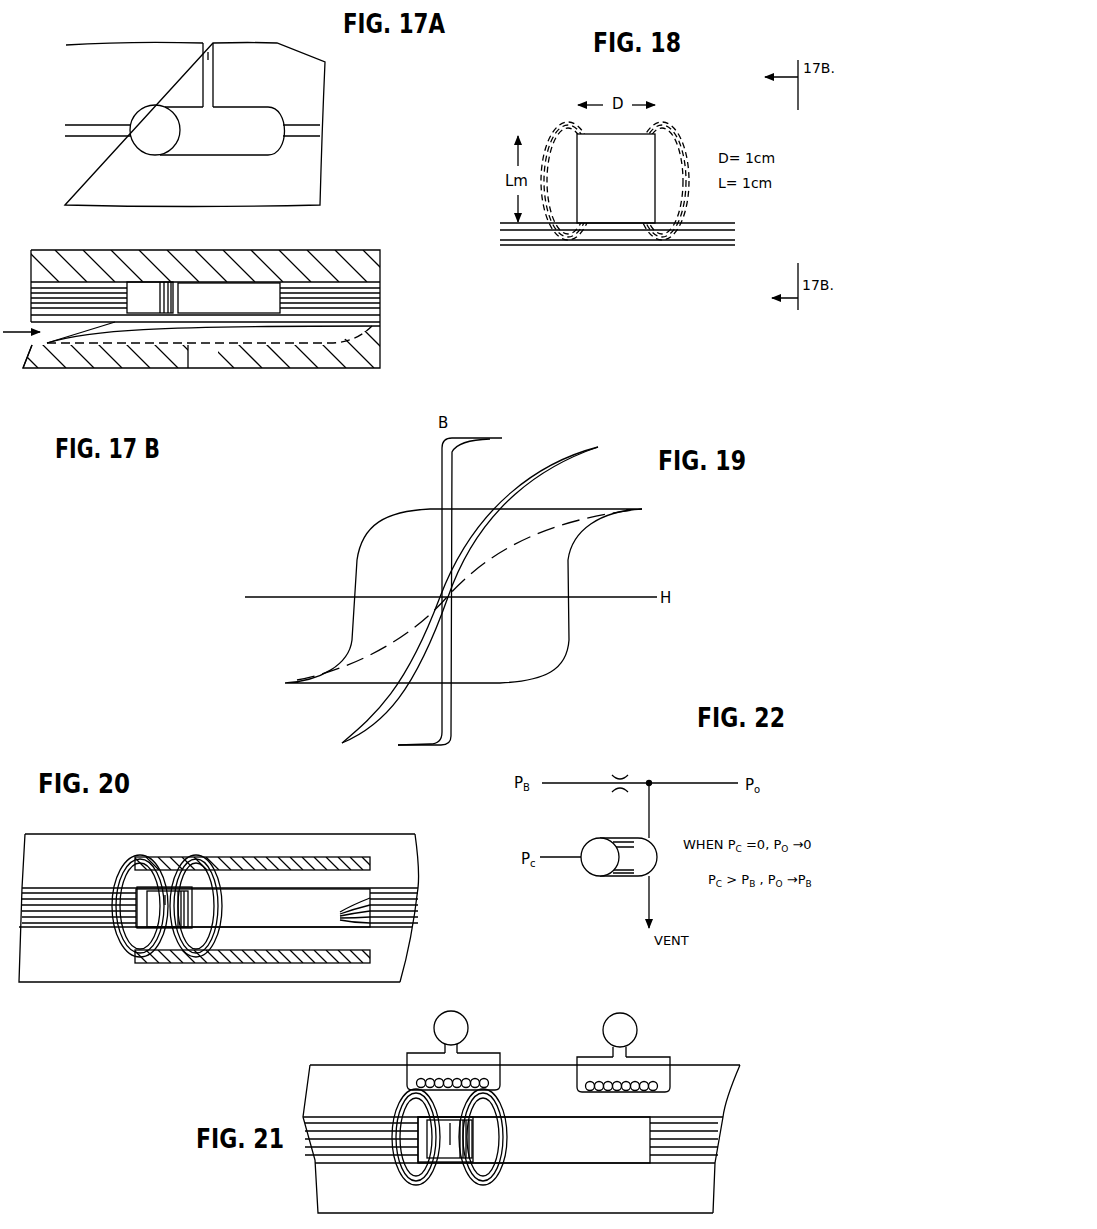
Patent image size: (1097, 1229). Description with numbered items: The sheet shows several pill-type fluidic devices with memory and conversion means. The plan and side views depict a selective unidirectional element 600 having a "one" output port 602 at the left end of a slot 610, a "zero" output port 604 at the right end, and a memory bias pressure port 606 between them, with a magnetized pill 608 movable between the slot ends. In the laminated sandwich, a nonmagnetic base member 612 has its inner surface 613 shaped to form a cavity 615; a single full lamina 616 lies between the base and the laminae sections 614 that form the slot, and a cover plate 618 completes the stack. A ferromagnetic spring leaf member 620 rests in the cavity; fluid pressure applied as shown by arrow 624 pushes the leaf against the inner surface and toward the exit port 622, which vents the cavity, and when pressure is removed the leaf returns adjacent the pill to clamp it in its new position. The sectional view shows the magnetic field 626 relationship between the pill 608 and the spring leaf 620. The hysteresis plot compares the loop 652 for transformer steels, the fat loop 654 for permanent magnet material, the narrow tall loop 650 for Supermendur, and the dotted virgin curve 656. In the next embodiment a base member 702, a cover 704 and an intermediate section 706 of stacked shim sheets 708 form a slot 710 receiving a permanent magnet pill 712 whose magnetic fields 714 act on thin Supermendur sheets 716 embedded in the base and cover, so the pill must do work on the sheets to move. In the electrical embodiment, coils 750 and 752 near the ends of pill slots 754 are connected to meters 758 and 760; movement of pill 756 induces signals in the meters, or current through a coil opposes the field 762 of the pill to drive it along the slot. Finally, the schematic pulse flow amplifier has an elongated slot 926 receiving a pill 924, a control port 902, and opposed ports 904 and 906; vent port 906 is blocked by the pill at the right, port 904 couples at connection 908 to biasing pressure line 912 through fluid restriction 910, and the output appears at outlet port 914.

In FIG. 17A, the selective unidirectional element 600 is at (293, 97).
In FIG. 17B, the selective unidirectional element 600 is at (283, 371).
In FIG. 17A, the "1" output port 602 is at (82, 134).
In FIG. 17A, the "0" output port 604 is at (303, 138).
In FIG. 17A, the memory bias pressure port 606 is at (212, 57).
In FIG. 17A, the pill 608 is at (157, 120).
In FIG. 17B, the pill 608 is at (145, 282).
In FIG. 18, the pill 608 is at (632, 188).
In FIG. 17A, the slot 610 is at (250, 138).
In FIG. 17B, the slot 610 is at (242, 306).
In FIG. 17B, the base member 612 is at (365, 356).
In FIG. 17B, the inner surface 613 is at (240, 344).
In FIG. 17B, the laminae sections 614 is at (393, 285).
In FIG. 17B, the cavity 615 is at (155, 338).
In FIG. 17B, the single full lamina 616 is at (368, 323).
In FIG. 18, the single full lamina 616 is at (722, 226).
In FIG. 17B, the cover plate 618 is at (368, 268).
In FIG. 17B, the ferromagnetic spring leaf member 620 is at (92, 343).
In FIG. 18, the ferromagnetic spring leaf member 620 is at (724, 245).
In FIG. 17B, the exit port 622 is at (218, 360).
In FIG. 17B, the fluid pressure arrow 624 is at (33, 370).
In FIG. 18, the magnetic flux loops 626 is at (667, 128).
In FIG. 19, the hysteresis loop for Supermendur 650 is at (450, 469).
In FIG. 19, the hysteresis loop for transformer steels 652 is at (548, 468).
In FIG. 19, the hysteresis loop for permanent magnetic material 654 is at (558, 567).
In FIG. 19, the virgin curve 656 is at (490, 560).
In FIG. 20, the base member 702 is at (393, 970).
In FIG. 20, the cover 704 is at (405, 855).
In FIG. 20, the intermediate section 706 is at (422, 893).
In FIG. 20, the shim sheets 708 is at (339, 910).
In FIG. 20, the slot 710 is at (286, 919).
In FIG. 20, the pill 712 is at (178, 913).
In FIG. 20, the magnetic fields 714 is at (170, 868).
In FIG. 20, the thin sheets 716 is at (258, 858).
In FIG. 21, the coil 750 is at (407, 1072).
In FIG. 21, the coil 752 is at (652, 1093).
In FIG. 21, the pill slot 754 is at (597, 1151).
In FIG. 21, the pill 756 is at (468, 1140).
In FIG. 21, the meter 758 is at (468, 1028).
In FIG. 21, the meter 760 is at (637, 1030).
In FIG. 21, the field 762 is at (478, 1185).
In FIG. 22, the control port 902 is at (566, 858).
In FIG. 22, the port 904 is at (651, 826).
In FIG. 22, the vent port 906 is at (650, 893).
In FIG. 22, the coupling point 908 is at (650, 780).
In FIG. 22, the fluid restriction 910 is at (615, 778).
In FIG. 22, the biasing pressure line 912 is at (556, 785).
In FIG. 22, the outlet port 914 is at (707, 783).
In FIG. 22, the pill 924 is at (613, 865).
In FIG. 22, the elongated slot 926 is at (628, 857).